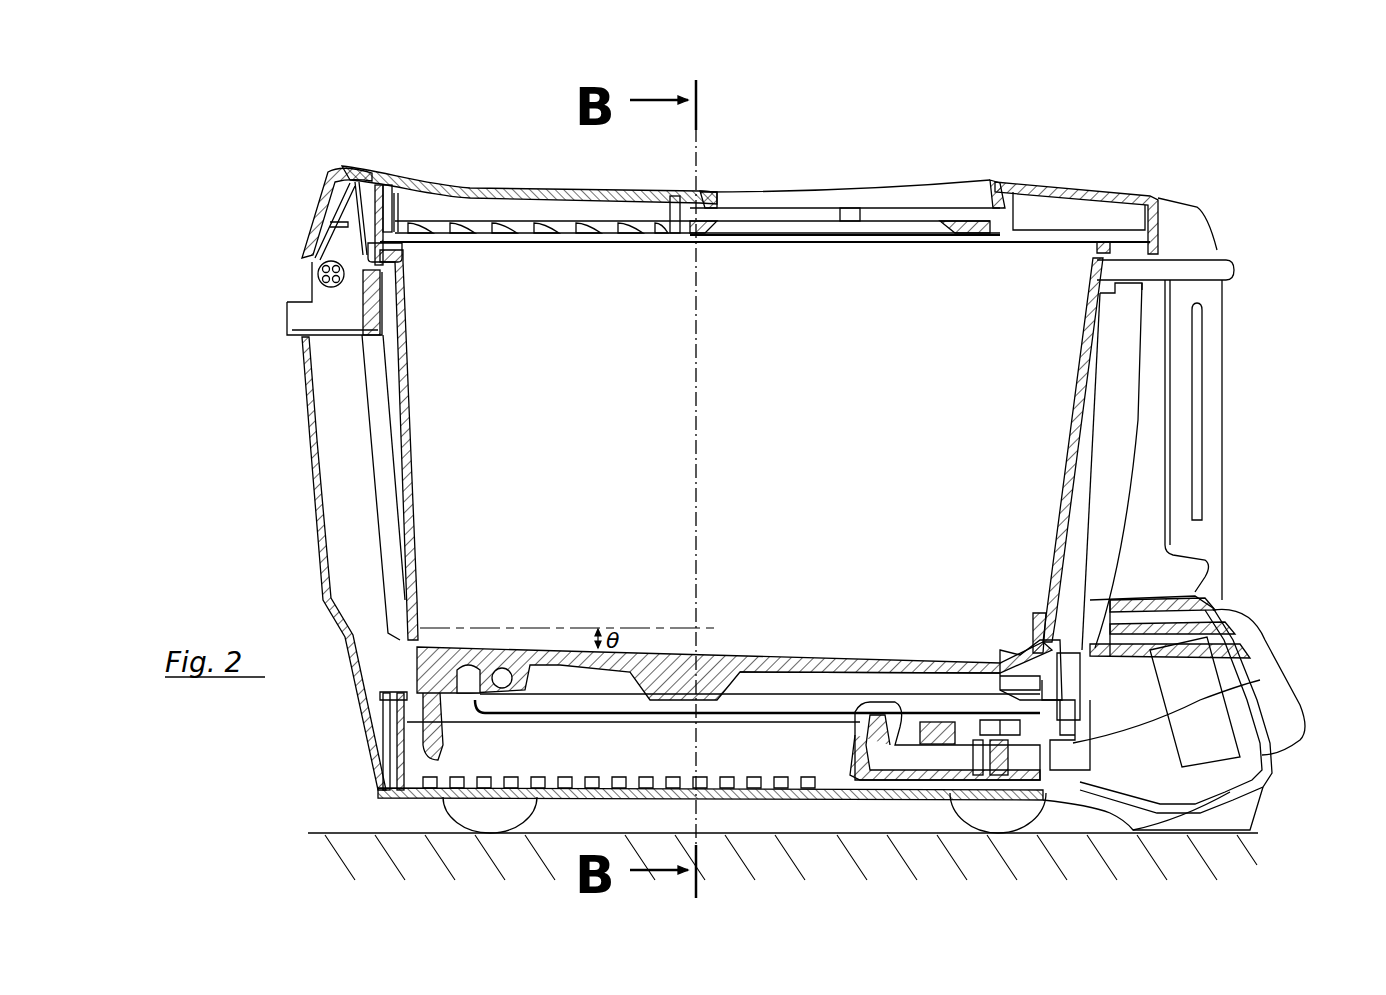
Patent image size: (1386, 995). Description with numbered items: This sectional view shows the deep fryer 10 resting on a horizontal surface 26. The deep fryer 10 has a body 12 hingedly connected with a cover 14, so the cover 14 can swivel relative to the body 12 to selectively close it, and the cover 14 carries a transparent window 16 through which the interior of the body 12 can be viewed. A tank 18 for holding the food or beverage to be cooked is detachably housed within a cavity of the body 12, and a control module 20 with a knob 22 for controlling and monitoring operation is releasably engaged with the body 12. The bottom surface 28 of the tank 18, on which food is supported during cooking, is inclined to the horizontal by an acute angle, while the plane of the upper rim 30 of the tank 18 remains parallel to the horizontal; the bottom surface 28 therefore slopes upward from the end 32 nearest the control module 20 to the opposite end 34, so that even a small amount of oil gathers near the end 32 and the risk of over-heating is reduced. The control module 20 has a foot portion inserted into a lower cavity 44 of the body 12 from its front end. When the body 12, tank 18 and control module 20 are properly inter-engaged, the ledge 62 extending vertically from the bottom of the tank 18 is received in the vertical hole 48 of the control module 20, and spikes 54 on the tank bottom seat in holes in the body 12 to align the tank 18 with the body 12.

The deep fryer 10 is at (1163, 125).
The body 12 is at (302, 437).
The cover 14 is at (1100, 185).
The transparent window 16 is at (805, 187).
The tank 18 is at (1090, 400).
The control module 20 is at (1200, 620).
The knob 22 is at (1257, 650).
The horizontal surface 26 is at (358, 833).
The bottom surface 28 is at (745, 657).
The upper rim 30 is at (400, 176).
The end 32 is at (985, 655).
The opposite end 34 is at (440, 647).
The lower cavity 44 is at (842, 760).
The vertical hole 48 is at (1262, 680).
The spikes 54 is at (433, 725).
The ledge 62 is at (1059, 648).